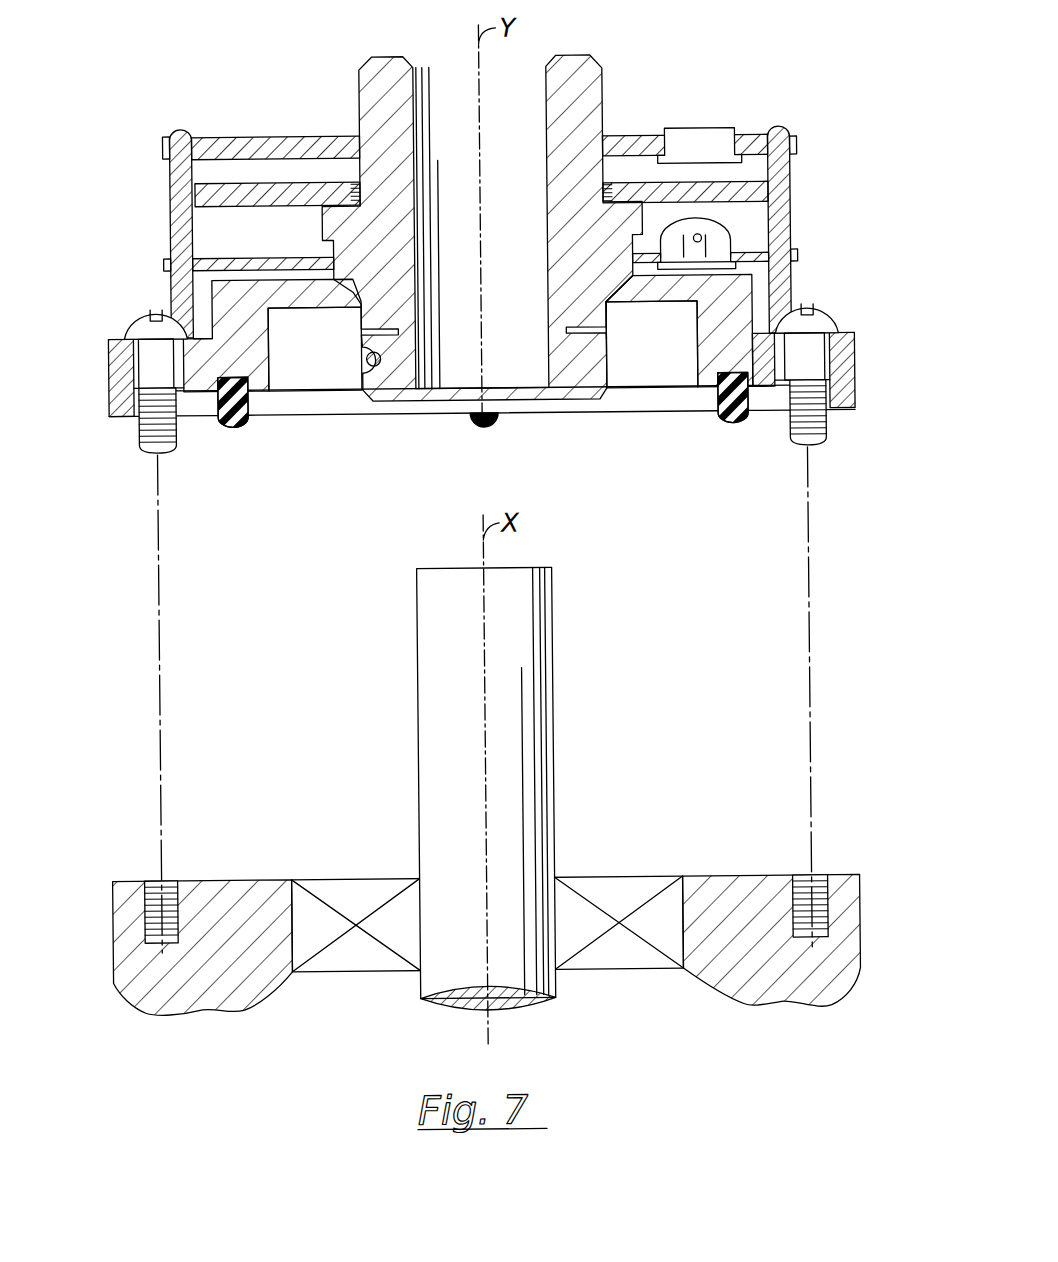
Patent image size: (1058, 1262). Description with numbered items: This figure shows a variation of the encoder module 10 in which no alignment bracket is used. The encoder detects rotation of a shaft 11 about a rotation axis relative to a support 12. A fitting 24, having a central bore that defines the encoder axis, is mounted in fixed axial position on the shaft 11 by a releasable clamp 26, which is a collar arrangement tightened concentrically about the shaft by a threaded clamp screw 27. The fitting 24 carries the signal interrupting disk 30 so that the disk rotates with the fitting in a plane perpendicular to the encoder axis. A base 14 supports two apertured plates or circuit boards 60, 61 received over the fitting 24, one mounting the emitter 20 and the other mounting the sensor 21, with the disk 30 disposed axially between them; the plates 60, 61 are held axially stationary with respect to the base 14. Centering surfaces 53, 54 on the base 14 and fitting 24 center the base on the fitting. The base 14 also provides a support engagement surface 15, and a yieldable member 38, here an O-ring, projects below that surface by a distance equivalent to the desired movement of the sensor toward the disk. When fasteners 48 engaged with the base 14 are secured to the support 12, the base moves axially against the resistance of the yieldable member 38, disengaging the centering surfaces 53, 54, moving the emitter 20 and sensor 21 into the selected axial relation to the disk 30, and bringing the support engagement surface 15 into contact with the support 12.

The encoder module 10 is at (742, 36).
The shaft 11 is at (460, 726).
The support 12 is at (704, 880).
The base 14 is at (280, 332).
The support engagement surface 15 is at (840, 416).
The emitter 20 is at (724, 224).
The sensor 21 is at (710, 130).
The fitting 24 is at (576, 54).
The clamp 26 is at (386, 412).
The clamp screw 27 is at (368, 360).
The signal interrupting disk 30 is at (750, 183).
The yieldable member 38 is at (730, 430).
The fastener 48 is at (152, 304).
The centering surface 53 is at (612, 308).
The centering surface 54 is at (620, 290).
The plate 60 is at (763, 256).
The plate 61 is at (760, 134).